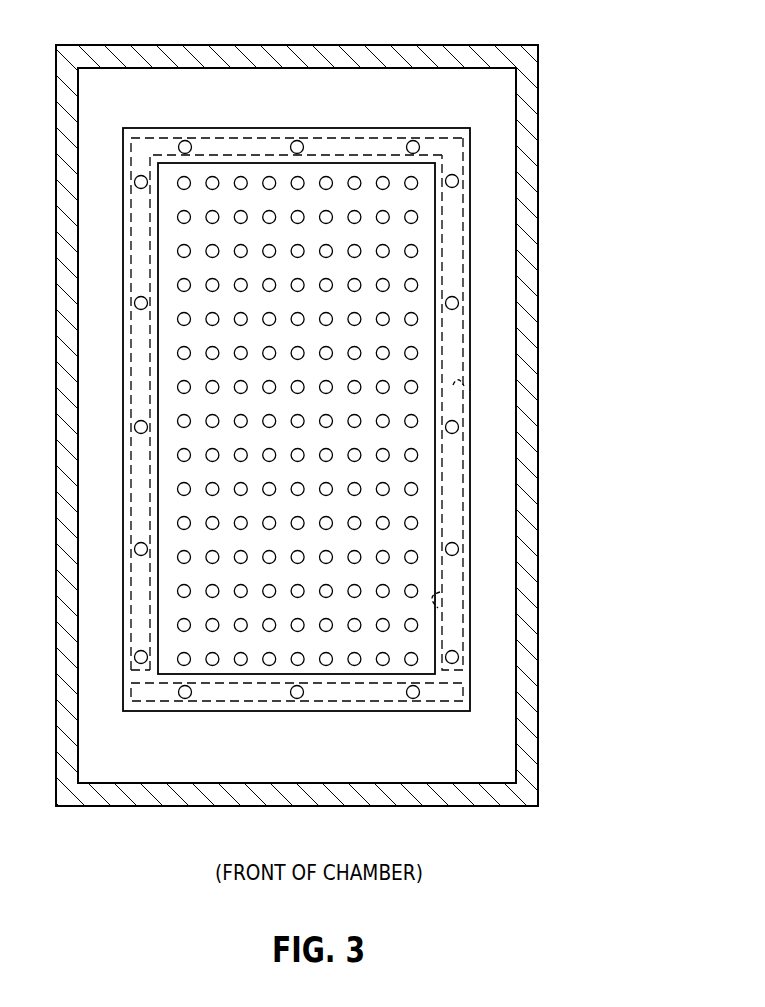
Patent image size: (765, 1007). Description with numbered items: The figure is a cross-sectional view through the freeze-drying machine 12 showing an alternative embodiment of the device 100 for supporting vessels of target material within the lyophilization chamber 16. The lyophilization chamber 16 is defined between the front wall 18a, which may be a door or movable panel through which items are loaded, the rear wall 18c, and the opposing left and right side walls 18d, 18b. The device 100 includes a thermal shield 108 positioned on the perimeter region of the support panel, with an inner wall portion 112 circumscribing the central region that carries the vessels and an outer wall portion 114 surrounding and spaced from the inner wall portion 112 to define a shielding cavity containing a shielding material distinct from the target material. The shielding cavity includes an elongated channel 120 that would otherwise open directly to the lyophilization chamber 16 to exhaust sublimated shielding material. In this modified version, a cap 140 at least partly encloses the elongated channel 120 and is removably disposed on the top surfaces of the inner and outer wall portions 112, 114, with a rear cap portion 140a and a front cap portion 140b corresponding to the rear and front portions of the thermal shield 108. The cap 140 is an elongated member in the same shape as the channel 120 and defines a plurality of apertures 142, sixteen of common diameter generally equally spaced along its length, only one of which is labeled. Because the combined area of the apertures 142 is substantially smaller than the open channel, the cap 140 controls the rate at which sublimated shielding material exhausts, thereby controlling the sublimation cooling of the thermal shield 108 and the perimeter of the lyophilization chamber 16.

The freeze-drying machine 12 is at (538, 126).
The lyophilization chamber 16 is at (204, 106).
The front wall 18a is at (395, 783).
The right side wall 18b is at (513, 712).
The rear wall 18c is at (283, 68).
The left side wall 18d is at (79, 93).
The device 100 is at (316, 127).
The thermal shield 108 is at (473, 249).
The inner wall portion 112 is at (440, 592).
The outer wall portion 114 is at (467, 655).
The elongated channel 120 is at (470, 390).
The cap 140 is at (447, 278).
The rear cap portion 140a is at (452, 483).
The front cap portion 140b is at (343, 690).
The aperture 142 is at (421, 148).